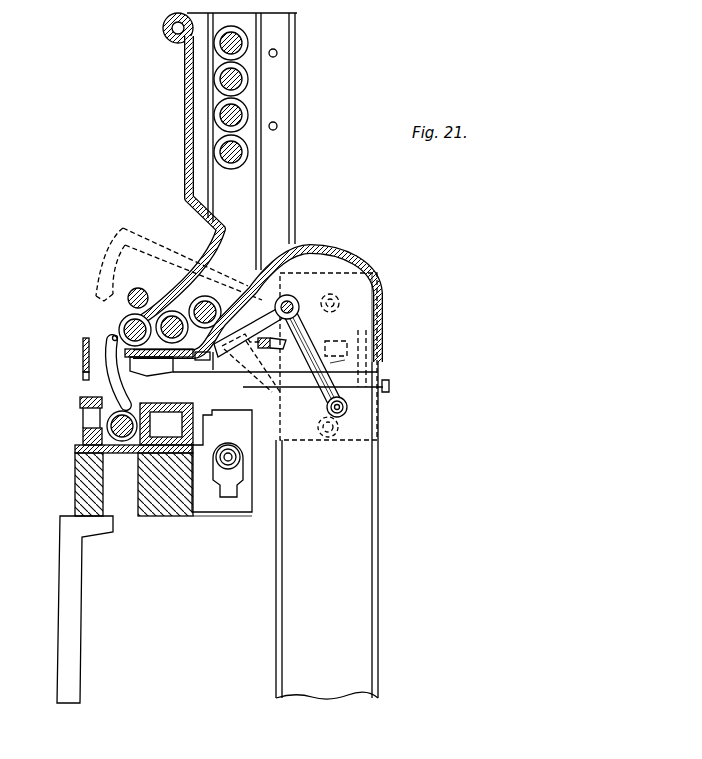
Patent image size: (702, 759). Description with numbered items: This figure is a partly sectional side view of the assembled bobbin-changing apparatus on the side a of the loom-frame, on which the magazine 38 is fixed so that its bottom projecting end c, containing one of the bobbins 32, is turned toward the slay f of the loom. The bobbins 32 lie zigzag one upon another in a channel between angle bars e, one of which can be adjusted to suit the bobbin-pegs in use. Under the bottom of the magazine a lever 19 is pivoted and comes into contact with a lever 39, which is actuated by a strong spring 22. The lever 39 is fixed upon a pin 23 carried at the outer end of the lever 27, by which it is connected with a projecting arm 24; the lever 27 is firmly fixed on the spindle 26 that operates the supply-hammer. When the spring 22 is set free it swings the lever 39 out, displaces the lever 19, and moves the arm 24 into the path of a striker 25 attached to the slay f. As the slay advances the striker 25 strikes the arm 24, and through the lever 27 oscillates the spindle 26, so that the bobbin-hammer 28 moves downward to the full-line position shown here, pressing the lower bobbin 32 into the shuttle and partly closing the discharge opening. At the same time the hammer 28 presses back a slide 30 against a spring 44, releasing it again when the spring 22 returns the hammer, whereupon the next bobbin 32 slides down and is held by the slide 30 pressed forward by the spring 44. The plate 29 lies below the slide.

The bobbin 32 is at (226, 153).
The angle bar e is at (272, 170).
The magazine 38 is at (350, 255).
The spindle 26 is at (294, 302).
The lever 19 is at (272, 334).
The lever 27 is at (314, 340).
The lever 39 is at (340, 340).
The spring 22 is at (345, 360).
The pin 23 is at (348, 406).
The projecting arm 24 is at (321, 442).
The striker 25 is at (249, 430).
The spring 44 is at (248, 351).
The plate 29 is at (163, 377).
The slide 30 is at (167, 369).
The bobbin-hammer 28 is at (108, 373).
The bottom projecting end c is at (83, 353).
The slay f is at (176, 510).
The side of the loom-frame a is at (352, 553).